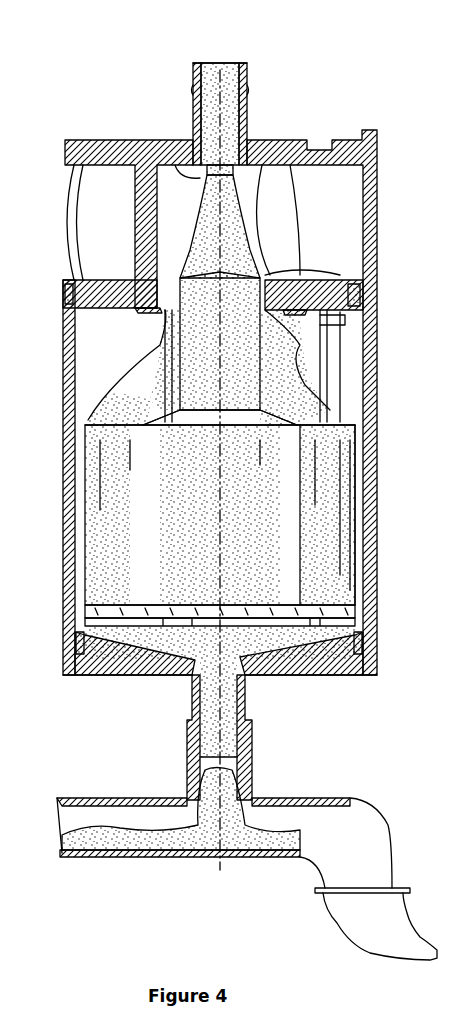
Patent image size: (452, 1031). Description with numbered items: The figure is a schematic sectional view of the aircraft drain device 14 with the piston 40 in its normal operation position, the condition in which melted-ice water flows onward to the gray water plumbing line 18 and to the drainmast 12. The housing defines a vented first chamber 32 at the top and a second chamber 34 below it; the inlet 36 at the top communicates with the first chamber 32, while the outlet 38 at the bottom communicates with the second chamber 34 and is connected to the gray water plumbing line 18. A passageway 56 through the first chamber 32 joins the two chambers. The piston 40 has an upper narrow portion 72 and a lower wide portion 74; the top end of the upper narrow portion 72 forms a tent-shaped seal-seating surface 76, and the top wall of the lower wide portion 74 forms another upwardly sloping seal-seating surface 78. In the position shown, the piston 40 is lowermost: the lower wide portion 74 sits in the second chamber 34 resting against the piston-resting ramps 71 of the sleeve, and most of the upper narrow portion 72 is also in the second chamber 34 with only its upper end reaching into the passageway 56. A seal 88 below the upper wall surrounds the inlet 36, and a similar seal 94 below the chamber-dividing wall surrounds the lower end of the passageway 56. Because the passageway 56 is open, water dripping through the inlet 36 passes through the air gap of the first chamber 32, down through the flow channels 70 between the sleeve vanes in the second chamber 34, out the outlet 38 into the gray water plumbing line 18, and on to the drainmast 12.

The drainmast 12 is at (365, 917).
The aircraft drain device 14 is at (402, 358).
The gray water plumbing line 18 is at (272, 800).
The first chamber 32 is at (337, 250).
The second chamber 34 is at (310, 355).
The inlet 36 is at (244, 108).
The outlet 38 is at (250, 705).
The piston 40 is at (300, 540).
The passageway 56 is at (180, 230).
The flow channels 70 is at (355, 485).
The piston-resting ramps 71 is at (78, 630).
The upper narrow portion 72 is at (180, 345).
The lower wide portion 74 is at (130, 490).
The seal-seating surface 76 is at (273, 242).
The seal-seating surface 78 is at (330, 430).
The seal 88 is at (200, 175).
The seal 94 is at (300, 335).